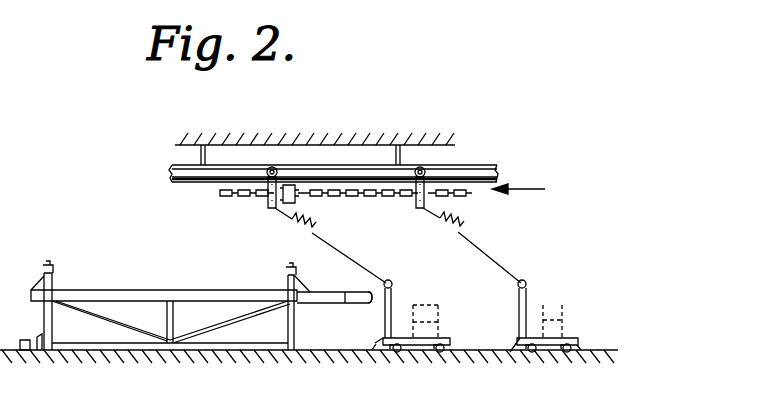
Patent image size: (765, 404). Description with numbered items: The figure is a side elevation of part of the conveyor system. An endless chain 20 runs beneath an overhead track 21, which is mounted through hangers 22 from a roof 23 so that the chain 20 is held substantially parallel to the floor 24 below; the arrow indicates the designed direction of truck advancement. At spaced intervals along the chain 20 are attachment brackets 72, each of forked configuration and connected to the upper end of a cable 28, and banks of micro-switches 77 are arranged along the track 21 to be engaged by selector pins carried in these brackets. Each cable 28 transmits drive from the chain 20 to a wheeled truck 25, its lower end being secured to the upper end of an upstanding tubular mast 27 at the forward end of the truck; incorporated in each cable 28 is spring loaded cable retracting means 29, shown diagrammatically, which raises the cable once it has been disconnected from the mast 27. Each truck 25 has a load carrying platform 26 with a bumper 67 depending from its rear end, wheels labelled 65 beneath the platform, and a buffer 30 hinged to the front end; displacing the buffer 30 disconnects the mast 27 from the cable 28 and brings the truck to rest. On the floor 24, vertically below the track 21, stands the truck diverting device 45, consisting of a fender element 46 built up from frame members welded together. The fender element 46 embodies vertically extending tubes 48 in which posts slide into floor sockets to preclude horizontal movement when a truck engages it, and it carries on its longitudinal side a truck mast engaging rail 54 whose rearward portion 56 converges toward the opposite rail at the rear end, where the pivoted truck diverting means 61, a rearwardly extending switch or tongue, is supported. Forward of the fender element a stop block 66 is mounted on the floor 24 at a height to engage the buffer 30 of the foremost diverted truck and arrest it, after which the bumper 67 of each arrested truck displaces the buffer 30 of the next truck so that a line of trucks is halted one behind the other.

The endless chain 20 is at (473, 196).
The track 21 is at (490, 163).
The hangers 22 is at (403, 148).
The roof 23 is at (316, 140).
The floor 24 is at (622, 358).
The wheeled trucks 25 is at (427, 332).
The load carrying platform 26 is at (440, 334).
The mast 27 is at (394, 292).
The cable 28 is at (343, 248).
The spring loaded cable retracting means 29 is at (294, 230).
The buffer 30 is at (375, 350).
The truck diverting device 45 is at (201, 295).
The fender element 46 is at (170, 298).
The vertically extending tubes 48 is at (52, 326).
The truck mast engaging rail 54 is at (112, 293).
The rearward portion 56 is at (311, 303).
The truck diverting means 61 is at (356, 292).
The caster wheel 65 is at (444, 352).
The stop block 66 is at (26, 341).
The bumper 67 is at (454, 342).
The attachment bracket 72 is at (268, 203).
The micro-switches 77 is at (297, 203).